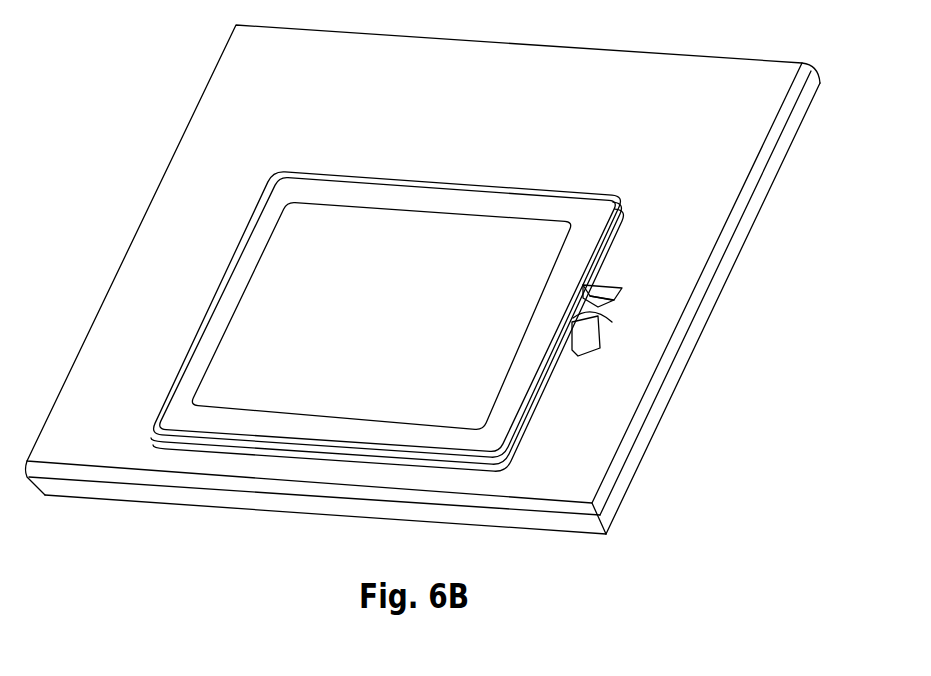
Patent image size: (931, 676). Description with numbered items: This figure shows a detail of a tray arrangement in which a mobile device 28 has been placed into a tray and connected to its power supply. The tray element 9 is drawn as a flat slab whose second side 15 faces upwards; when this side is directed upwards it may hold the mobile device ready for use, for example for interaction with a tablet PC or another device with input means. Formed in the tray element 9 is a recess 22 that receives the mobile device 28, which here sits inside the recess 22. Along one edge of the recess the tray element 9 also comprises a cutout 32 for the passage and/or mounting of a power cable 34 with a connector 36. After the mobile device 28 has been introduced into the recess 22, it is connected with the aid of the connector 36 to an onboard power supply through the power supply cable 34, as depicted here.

The tray element 9 is at (188, 165).
The second side 15 is at (696, 128).
The recess 22 is at (438, 157).
The mobile device 28 is at (402, 313).
The cutout 32 is at (600, 288).
The power cable 34 is at (605, 320).
The connector 36 is at (622, 305).